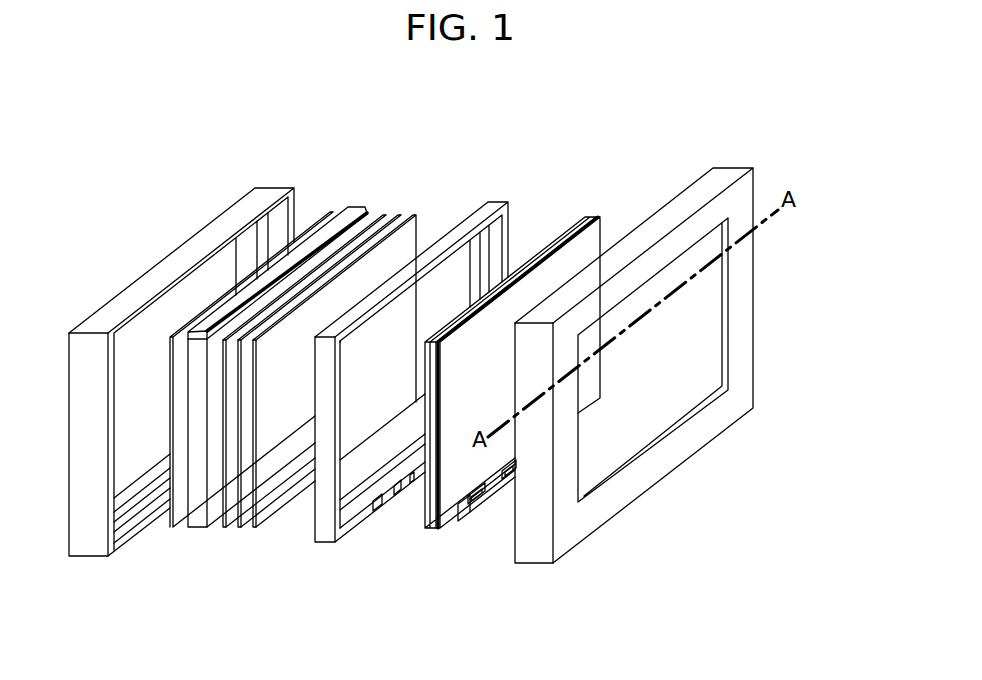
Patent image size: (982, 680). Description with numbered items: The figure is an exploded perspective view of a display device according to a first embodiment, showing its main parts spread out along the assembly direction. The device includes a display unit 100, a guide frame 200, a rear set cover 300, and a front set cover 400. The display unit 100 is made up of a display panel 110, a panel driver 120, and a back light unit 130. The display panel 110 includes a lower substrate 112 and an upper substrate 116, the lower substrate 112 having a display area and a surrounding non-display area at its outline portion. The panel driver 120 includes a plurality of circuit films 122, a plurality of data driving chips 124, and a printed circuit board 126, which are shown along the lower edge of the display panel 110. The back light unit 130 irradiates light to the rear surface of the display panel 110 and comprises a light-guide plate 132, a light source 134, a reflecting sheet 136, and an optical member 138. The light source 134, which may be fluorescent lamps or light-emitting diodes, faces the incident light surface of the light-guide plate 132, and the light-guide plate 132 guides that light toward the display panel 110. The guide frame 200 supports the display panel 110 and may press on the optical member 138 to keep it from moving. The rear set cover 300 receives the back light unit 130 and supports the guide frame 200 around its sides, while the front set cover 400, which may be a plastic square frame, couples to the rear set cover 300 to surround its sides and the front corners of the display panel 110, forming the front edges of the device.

The display unit 100 is at (518, 98).
The display panel 110 is at (576, 126).
The lower substrate 112 is at (587, 221).
The upper substrate 116 is at (598, 216).
The panel driver 120 is at (509, 563).
The circuit films 122 is at (477, 506).
The data driving chips 124 is at (505, 481).
The printed circuit board 126 is at (459, 518).
The back light unit 130 is at (413, 202).
The light-guide plate 132 is at (197, 528).
The light source 134 is at (220, 316).
The reflecting sheet 136 is at (170, 528).
The optical member 138 is at (254, 544).
The guide frame 200 is at (320, 546).
The rear set cover 300 is at (276, 186).
The front set cover 400 is at (730, 163).